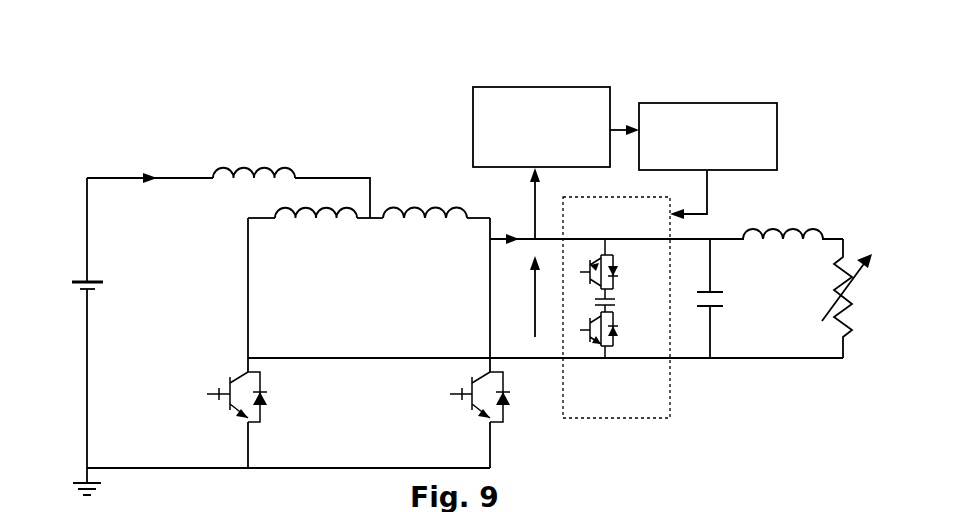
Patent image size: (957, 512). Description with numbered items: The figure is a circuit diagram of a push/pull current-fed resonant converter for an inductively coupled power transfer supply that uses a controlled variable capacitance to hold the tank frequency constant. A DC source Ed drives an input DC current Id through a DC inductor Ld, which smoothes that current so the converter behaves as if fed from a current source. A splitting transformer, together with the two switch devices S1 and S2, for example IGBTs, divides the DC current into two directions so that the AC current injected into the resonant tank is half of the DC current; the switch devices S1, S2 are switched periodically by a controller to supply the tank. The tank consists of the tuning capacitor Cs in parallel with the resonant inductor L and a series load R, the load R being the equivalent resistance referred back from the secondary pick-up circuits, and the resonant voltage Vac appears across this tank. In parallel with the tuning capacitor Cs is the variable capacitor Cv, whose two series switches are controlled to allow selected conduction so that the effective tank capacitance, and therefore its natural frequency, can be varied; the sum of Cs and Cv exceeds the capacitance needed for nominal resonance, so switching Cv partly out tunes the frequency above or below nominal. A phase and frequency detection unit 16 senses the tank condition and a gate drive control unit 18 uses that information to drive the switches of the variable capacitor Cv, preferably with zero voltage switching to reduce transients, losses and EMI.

The phase detector 16 is at (497, 87).
The control unit 18 is at (777, 137).
The DC source Ed is at (102, 323).
The input DC current Id is at (150, 164).
The DC inductor Ld is at (254, 158).
The switch device S1 is at (237, 407).
The switch device S2 is at (480, 407).
The resonant voltage Vac is at (520, 296).
The variable capacitor Cv is at (616, 334).
The tuning capacitor Cs is at (725, 298).
The resonant inductor L is at (783, 219).
The load resistor R is at (839, 298).